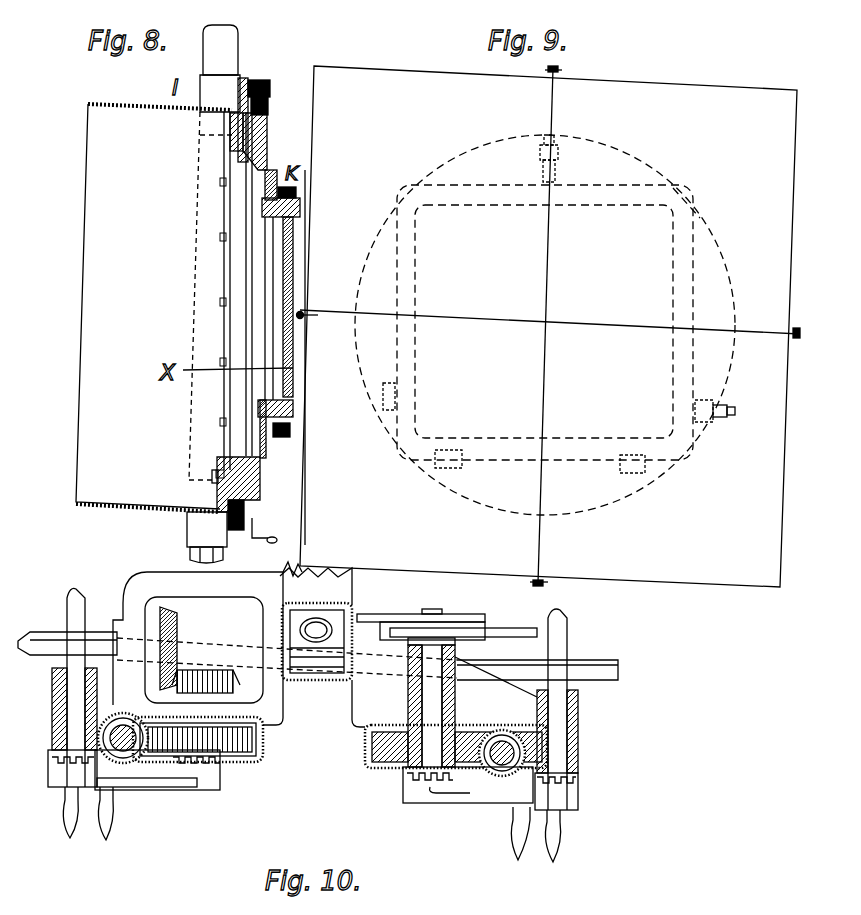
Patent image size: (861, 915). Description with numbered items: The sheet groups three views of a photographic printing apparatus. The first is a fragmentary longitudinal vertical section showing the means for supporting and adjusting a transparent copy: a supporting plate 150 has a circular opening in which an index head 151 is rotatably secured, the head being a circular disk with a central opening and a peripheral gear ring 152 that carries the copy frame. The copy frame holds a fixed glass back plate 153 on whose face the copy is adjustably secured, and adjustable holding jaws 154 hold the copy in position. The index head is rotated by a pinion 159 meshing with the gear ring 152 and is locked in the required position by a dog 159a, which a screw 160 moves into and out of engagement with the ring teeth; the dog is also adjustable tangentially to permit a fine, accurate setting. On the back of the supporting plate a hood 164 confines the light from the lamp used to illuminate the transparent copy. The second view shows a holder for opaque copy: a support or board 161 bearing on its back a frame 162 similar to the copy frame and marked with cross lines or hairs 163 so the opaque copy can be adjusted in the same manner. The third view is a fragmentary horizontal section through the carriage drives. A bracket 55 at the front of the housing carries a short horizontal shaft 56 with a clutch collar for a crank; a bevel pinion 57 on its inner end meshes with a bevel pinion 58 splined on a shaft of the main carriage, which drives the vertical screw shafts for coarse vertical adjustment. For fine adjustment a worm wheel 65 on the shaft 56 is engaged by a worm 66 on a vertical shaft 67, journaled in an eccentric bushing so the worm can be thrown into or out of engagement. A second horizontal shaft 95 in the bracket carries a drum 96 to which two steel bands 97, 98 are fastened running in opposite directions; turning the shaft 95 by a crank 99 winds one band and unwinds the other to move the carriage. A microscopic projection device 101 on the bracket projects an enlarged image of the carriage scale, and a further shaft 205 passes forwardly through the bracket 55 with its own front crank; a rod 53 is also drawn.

In FIG. 8, the supporting plate 150 is at (244, 80).
In FIG. 8, the index head 151 is at (243, 150).
In FIG. 8, the gear ring 152 is at (217, 500).
In FIG. 8, the glass back plate 153 is at (298, 334).
In FIG. 8, the holding jaws 154 is at (262, 206).
In FIG. 8, the pinion 159 is at (235, 531).
In FIG. 8, the dog 159a is at (230, 118).
In FIG. 8, the screw 160 is at (262, 84).
In FIG. 9, the support or board 161 is at (548, 326).
In FIG. 9, the frame 162 is at (722, 259).
In FIG. 9, the cross lines or hairs 163 is at (547, 302).
In FIG. 8, the hood 164 is at (78, 472).
In FIG. 10, the rod 53 is at (602, 658).
In FIG. 10, the bracket 55 is at (283, 716).
In FIG. 10, the horizontal shaft 56 is at (197, 793).
In FIG. 10, the bevel pinion 57 is at (207, 680).
In FIG. 10, the bevel pinion 58 is at (182, 648).
In FIG. 10, the worm wheel 65 is at (250, 763).
In FIG. 10, the worm 66 is at (130, 762).
In FIG. 10, the vertical shaft 67 is at (52, 739).
In FIG. 10, the horizontal shaft 95 is at (408, 695).
In FIG. 10, the drum 96 is at (462, 614).
In FIG. 10, the band 97 is at (372, 614).
In FIG. 10, the band 98 is at (503, 629).
In FIG. 10, the crank 99 is at (485, 804).
In FIG. 10, the microscopic projection device 101 is at (322, 647).
In FIG. 10, the shaft 205 is at (575, 749).